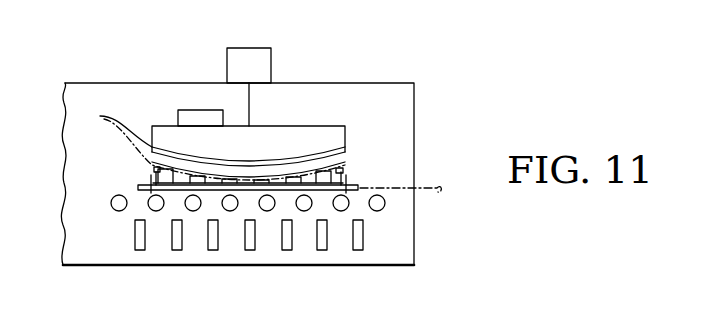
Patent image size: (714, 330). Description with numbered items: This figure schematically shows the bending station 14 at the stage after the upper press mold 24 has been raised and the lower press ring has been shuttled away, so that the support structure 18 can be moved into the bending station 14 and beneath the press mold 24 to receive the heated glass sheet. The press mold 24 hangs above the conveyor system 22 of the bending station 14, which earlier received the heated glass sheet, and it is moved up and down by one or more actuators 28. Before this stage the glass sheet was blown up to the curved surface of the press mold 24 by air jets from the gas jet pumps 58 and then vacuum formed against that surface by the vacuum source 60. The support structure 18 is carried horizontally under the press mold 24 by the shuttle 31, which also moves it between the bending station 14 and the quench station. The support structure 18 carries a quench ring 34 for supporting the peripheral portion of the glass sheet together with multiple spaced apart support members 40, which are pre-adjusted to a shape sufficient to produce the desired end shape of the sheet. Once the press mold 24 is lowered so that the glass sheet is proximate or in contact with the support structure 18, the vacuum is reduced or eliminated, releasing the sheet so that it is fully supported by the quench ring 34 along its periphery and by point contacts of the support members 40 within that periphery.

The bending station 14 is at (388, 64).
The support structure 18 is at (357, 178).
The conveyor system 22 is at (106, 187).
The upper press mold 24 is at (295, 126).
The actuators 28 is at (272, 65).
The shuttle 31 is at (360, 191).
The quench ring 34 is at (347, 163).
The support members 40 is at (247, 182).
The gas jet pumps 58 is at (255, 235).
The vacuum source 60 is at (200, 110).